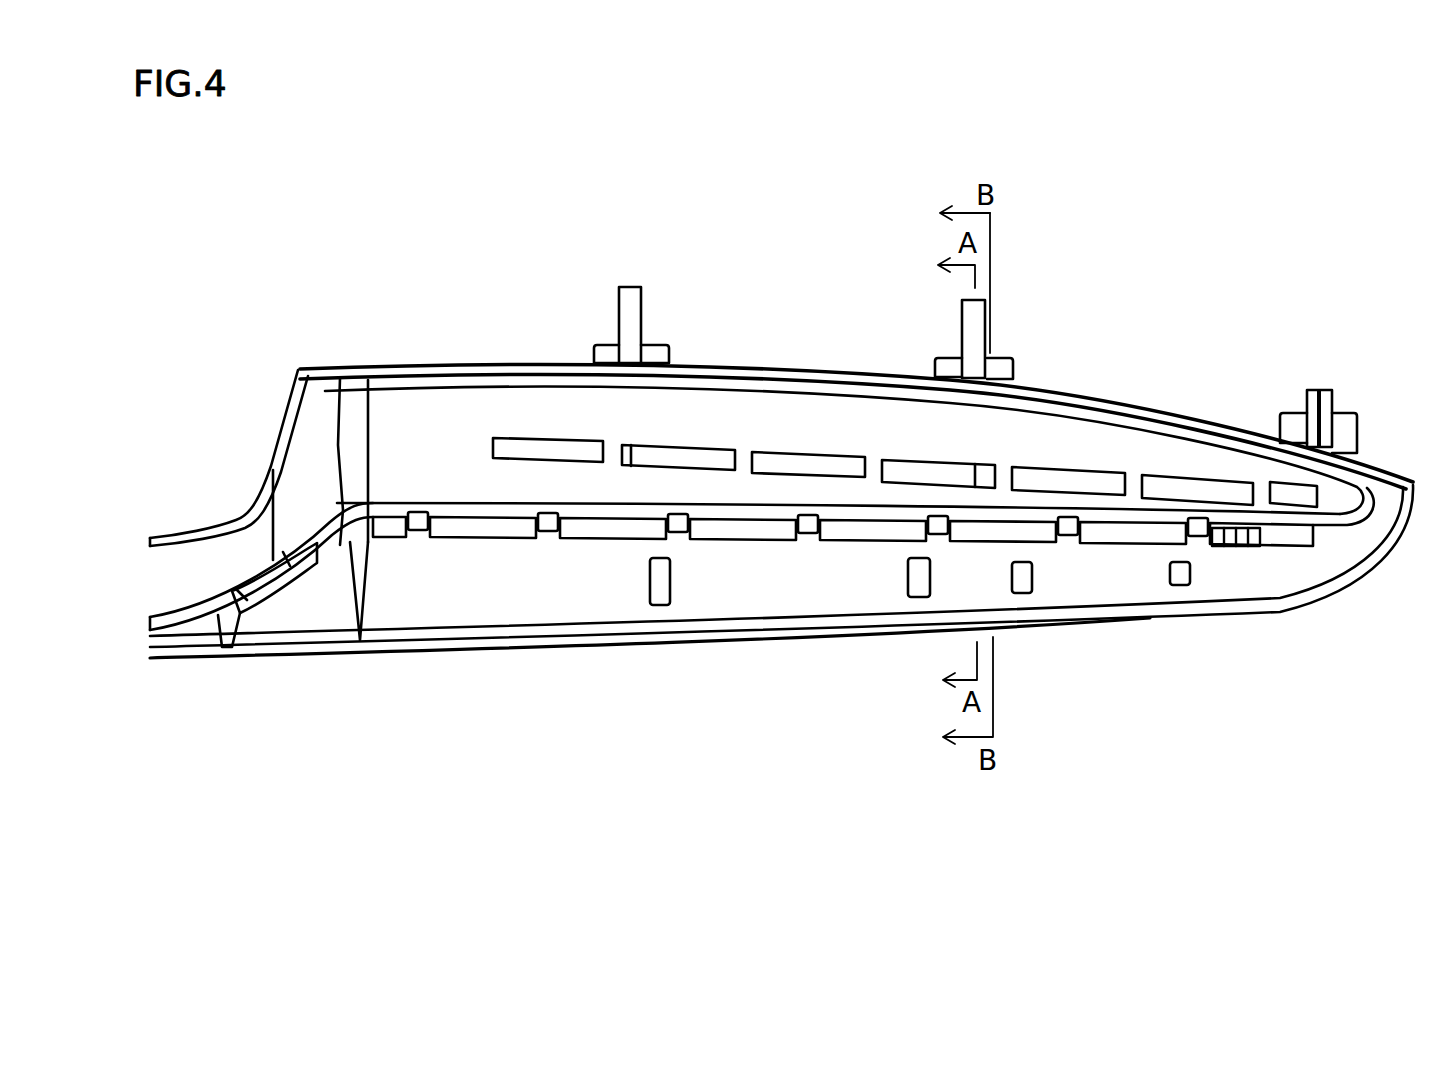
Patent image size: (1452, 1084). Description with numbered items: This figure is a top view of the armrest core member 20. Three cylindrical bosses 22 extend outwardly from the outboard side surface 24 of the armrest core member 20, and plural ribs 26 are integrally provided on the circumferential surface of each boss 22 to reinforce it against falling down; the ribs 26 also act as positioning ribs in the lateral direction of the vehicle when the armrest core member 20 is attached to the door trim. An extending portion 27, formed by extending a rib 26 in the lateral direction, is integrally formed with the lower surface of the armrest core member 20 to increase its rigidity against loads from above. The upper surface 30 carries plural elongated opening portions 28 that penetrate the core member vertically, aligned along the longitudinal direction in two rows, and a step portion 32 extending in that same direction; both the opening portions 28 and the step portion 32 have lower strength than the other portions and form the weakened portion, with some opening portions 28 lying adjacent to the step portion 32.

The armrest core member 20 is at (809, 364).
The boss 22 is at (630, 295).
The outboard side surface 24 is at (555, 365).
The rib 26 is at (598, 352).
The extending portion 27 is at (630, 527).
The opening portion 28 is at (510, 440).
The upper surface 30 is at (890, 445).
The step portion 32 is at (1220, 540).